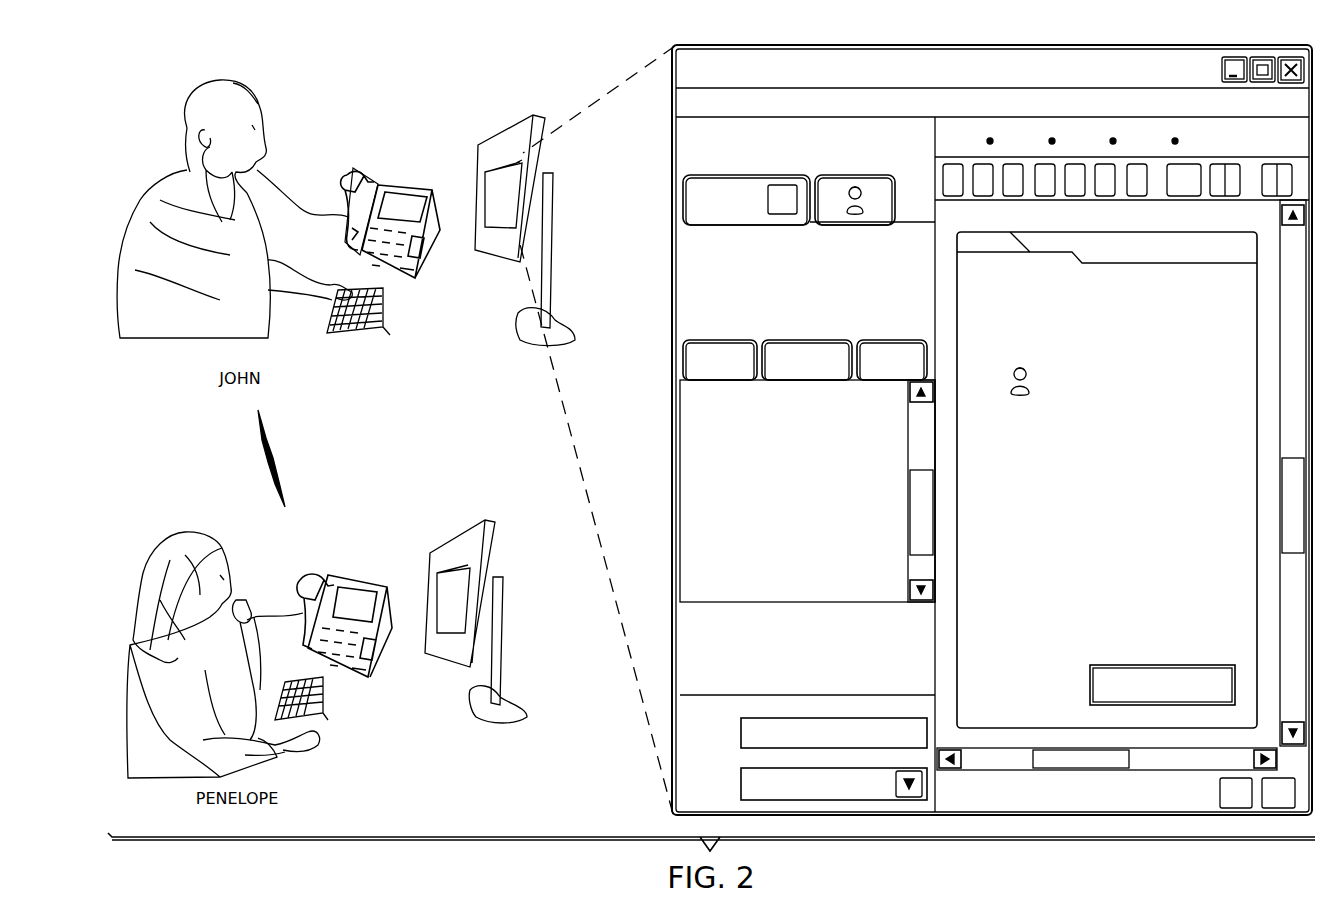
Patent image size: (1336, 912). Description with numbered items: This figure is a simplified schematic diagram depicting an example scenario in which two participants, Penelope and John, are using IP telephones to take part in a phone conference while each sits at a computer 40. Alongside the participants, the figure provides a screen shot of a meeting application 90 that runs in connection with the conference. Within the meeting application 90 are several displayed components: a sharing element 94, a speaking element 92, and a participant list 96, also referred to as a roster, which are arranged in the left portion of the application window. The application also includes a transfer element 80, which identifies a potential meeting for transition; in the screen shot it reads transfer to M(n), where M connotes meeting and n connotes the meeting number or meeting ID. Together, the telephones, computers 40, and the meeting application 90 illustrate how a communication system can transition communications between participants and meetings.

The computer 40 is at (538, 115).
The transfer element 80 is at (1090, 685).
The meeting application 90 is at (956, 430).
The speaking element 92 is at (875, 303).
The sharing element 94 is at (875, 253).
The participant list 96 is at (805, 598).